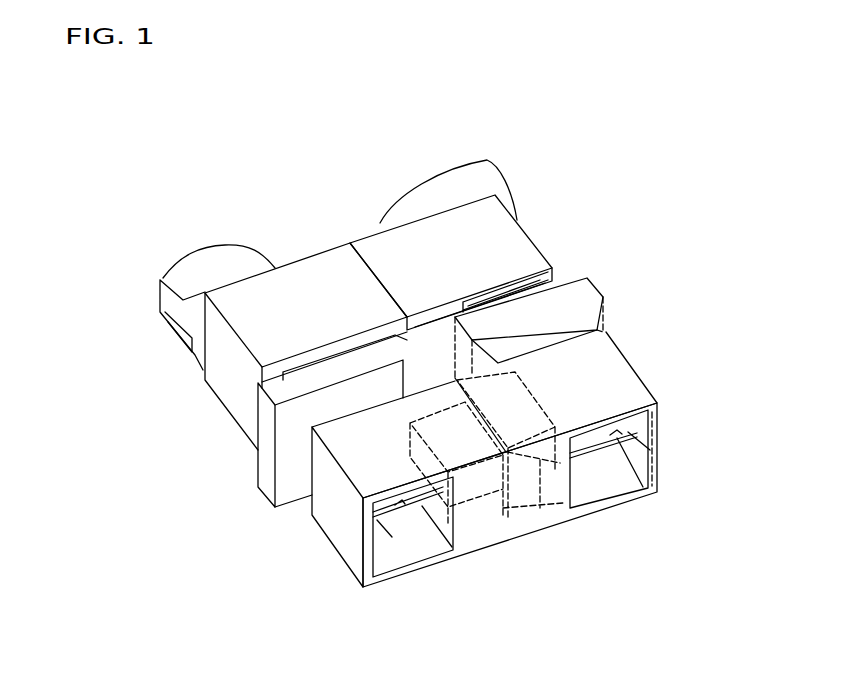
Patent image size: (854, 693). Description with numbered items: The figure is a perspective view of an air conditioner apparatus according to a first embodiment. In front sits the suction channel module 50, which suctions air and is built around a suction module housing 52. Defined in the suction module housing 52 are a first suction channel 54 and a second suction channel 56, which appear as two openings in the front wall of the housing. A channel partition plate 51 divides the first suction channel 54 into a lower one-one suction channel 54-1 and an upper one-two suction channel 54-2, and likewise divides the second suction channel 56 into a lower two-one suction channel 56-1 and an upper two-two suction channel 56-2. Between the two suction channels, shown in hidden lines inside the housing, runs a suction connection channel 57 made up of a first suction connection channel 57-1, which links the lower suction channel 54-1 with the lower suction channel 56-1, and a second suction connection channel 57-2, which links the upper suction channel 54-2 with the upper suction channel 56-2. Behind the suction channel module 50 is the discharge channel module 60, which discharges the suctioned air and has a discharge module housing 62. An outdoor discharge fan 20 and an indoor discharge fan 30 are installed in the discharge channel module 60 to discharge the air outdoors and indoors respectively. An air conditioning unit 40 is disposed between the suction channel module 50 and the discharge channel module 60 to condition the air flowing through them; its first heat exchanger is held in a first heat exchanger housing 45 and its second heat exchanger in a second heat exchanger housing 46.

The outdoor discharge fan 20 is at (236, 238).
The indoor discharge fan 30 is at (476, 215).
The air conditioning unit 40 is at (561, 304).
The first heat exchanger housing 45 is at (270, 490).
The second heat exchanger housing 46 is at (580, 277).
The suction channel module 50 is at (527, 483).
The channel partition plate 51 is at (376, 513).
The suction module housing 52 is at (617, 357).
The first suction channel 54 is at (422, 577).
The 1-1 suction channel 54-1 is at (422, 537).
The 1-2 suction channel 54-2 is at (400, 503).
The second suction channel 56 is at (656, 505).
The 2-1 suction channel 56-1 is at (592, 478).
The 2-2 suction channel 56-2 is at (615, 432).
The suction connection channel 57 is at (509, 499).
The first suction connection channel 57-1 is at (493, 520).
The second suction connection channel 57-2 is at (540, 510).
The discharge channel module 60 is at (476, 243).
The discharge module housing 62 is at (515, 218).